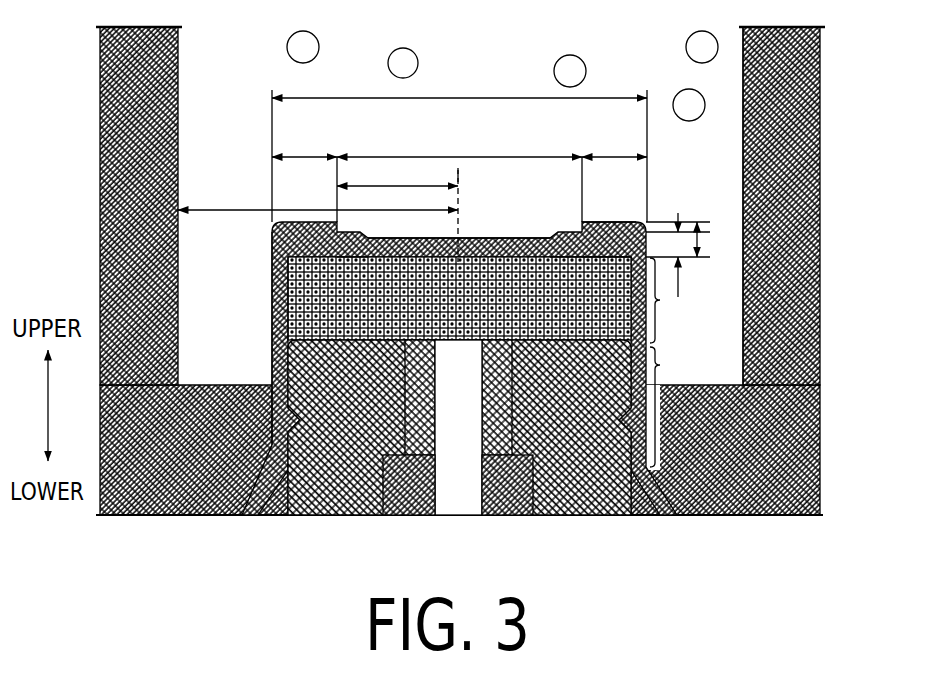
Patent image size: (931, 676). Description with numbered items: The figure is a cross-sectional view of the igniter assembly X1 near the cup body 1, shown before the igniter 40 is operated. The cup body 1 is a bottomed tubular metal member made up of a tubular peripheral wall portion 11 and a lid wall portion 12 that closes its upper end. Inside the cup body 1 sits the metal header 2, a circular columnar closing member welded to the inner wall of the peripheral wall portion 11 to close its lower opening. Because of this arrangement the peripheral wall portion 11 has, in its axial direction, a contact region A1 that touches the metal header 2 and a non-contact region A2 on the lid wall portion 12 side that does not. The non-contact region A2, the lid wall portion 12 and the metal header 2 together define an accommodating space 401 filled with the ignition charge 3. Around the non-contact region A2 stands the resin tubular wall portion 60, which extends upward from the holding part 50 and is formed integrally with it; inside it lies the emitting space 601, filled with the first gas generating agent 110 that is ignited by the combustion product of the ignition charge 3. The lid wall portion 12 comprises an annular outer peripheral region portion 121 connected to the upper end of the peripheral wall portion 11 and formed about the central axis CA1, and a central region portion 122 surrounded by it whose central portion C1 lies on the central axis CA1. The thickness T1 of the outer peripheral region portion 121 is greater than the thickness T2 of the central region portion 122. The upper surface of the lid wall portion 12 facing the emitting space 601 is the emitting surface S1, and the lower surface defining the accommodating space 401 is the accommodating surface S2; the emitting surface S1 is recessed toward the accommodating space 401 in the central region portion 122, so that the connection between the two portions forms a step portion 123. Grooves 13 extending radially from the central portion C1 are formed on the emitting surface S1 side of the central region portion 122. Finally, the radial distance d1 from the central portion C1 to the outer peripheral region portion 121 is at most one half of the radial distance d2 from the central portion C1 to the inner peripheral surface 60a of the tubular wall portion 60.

The cup body 1 is at (270, 262).
The metal header 2 is at (287, 366).
The ignition charge 3 is at (304, 318).
The peripheral wall portion 11 is at (272, 292).
The lid wall portion 12 is at (442, 98).
The grooves 13 is at (514, 236).
The igniter 40 is at (245, 184).
The holding part 50 is at (822, 468).
The tubular wall portion 60 is at (822, 300).
The inner peripheral surface 60a is at (743, 166).
The first gas generating agent 110 is at (587, 70).
The outer peripheral region portion 121 is at (296, 157).
The central region portion 122 is at (440, 157).
The step portion 123 is at (350, 258).
The accommodating space 401 is at (480, 309).
The emitting space 601 is at (246, 75).
The emitting surface S1 is at (611, 221).
The accommodating surface S2 is at (602, 258).
The thickness of the outer peripheral region portion T1 is at (688, 239).
The thickness of the central region portion T2 is at (695, 255).
The contact region A1 is at (675, 407).
The non-contact region A2 is at (675, 300).
The central portion C1 is at (479, 215).
The central axis CA1 is at (462, 182).
The distance d1 is at (397, 175).
The distance d2 is at (318, 193).
The igniter assembly X1 is at (77, 256).